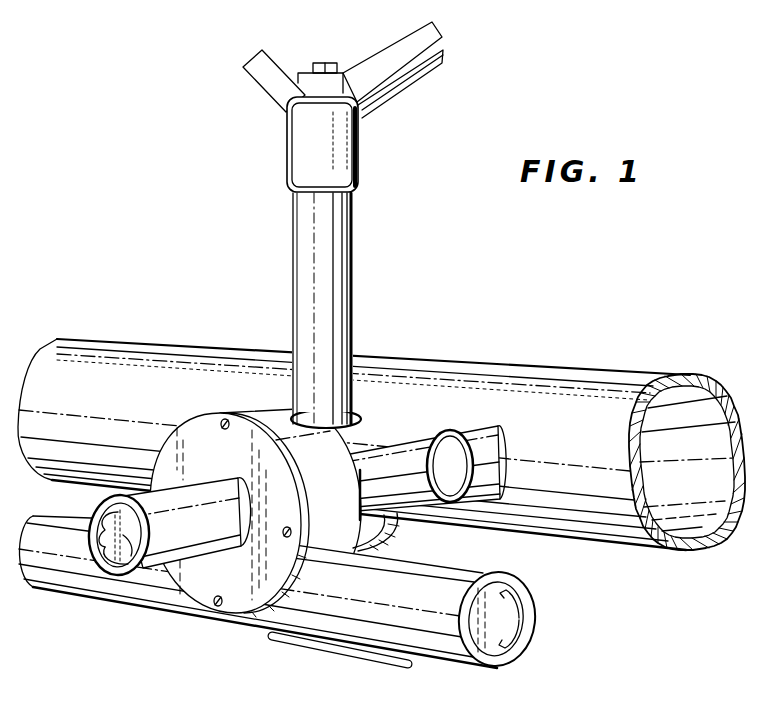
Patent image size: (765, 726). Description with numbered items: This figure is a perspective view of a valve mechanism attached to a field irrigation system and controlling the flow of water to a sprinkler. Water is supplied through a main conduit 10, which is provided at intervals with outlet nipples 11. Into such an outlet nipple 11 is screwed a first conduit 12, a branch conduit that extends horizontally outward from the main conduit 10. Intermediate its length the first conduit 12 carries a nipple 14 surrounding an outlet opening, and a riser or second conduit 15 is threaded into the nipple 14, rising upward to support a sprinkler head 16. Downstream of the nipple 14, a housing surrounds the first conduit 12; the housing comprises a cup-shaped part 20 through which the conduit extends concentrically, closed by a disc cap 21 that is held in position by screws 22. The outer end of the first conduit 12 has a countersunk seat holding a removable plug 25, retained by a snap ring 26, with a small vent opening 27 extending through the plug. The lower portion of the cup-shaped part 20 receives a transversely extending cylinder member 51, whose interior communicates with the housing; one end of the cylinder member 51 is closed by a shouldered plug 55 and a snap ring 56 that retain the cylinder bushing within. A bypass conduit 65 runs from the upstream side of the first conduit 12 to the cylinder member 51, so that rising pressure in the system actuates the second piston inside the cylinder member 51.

The main conduit 10 is at (622, 373).
The outlet nipple 11 is at (460, 431).
The first conduit 12 is at (396, 527).
The nipple 14 is at (362, 419).
The second conduit 15 is at (342, 291).
The sprinkler head 16 is at (347, 152).
The cup-shaped part 20 is at (252, 412).
The disc cap 21 is at (193, 412).
The screws 22 is at (214, 607).
The removable plug 25 is at (101, 511).
The snap ring 26 is at (116, 562).
The vent opening 27 is at (124, 537).
The cylinder member 51 is at (445, 572).
The shouldered plug 55 is at (507, 652).
The snap ring 56 is at (515, 597).
The bypass conduit 65 is at (370, 660).